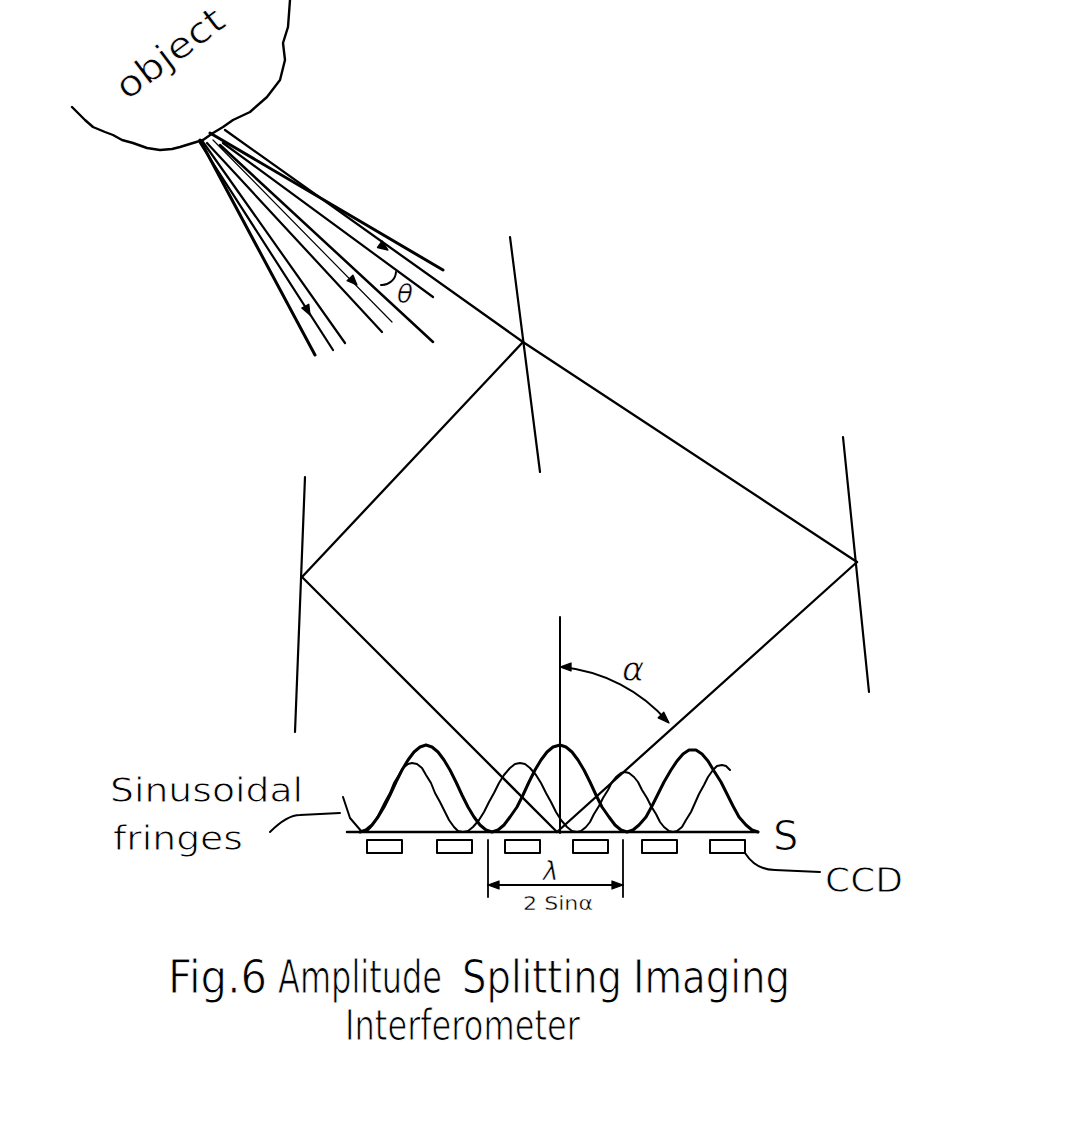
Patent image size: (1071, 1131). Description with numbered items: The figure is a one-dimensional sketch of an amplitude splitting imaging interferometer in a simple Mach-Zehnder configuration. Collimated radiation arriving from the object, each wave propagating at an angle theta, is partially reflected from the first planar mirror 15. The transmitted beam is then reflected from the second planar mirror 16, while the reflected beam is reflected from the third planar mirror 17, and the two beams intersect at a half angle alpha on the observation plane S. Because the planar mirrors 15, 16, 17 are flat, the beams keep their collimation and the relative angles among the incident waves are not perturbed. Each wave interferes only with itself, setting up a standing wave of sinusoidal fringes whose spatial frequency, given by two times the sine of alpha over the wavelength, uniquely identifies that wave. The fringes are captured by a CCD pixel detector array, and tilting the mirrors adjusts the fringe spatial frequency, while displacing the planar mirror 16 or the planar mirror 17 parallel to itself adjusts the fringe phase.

The planar mirror M15 15 is at (533, 336).
The planar mirror M16 16 is at (864, 551).
The planar mirror M17 17 is at (289, 580).